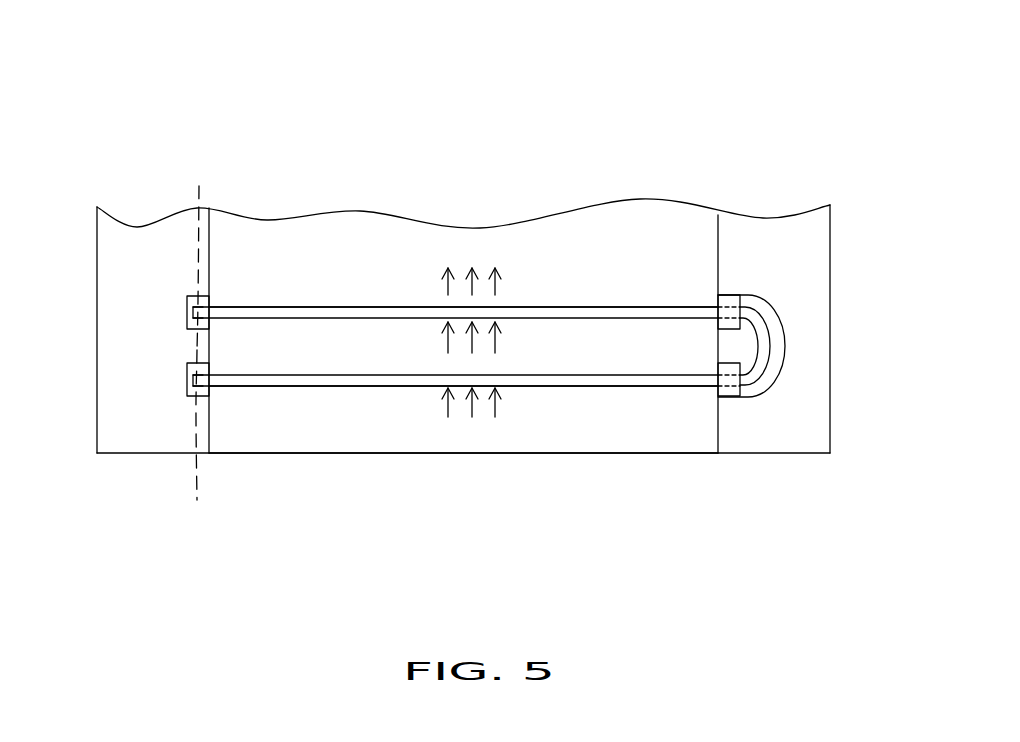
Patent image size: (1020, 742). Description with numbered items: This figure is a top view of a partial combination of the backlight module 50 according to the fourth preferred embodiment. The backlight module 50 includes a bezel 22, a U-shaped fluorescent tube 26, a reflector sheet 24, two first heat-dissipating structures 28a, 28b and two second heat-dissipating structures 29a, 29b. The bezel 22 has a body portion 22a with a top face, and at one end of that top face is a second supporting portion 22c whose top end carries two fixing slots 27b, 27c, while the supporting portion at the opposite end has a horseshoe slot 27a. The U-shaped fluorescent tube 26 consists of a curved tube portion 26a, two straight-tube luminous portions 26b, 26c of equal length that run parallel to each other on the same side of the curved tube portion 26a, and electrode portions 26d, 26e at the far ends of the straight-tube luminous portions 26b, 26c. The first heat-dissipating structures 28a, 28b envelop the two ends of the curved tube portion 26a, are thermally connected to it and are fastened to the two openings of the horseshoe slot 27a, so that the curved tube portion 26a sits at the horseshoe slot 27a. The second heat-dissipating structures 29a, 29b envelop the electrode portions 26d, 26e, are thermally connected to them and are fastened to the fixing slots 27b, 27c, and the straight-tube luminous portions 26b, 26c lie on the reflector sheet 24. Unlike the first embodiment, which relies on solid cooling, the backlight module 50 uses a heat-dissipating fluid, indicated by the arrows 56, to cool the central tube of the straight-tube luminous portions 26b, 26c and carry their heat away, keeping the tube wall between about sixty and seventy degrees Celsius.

The backlight module 50 is at (853, 73).
The bezel 22 is at (835, 238).
The body portion 22a is at (277, 453).
The second supporting portion 22c is at (142, 440).
The reflector sheet 24 is at (348, 440).
The U-shaped fluorescent tube 26 is at (596, 302).
The curved tube portion 26a is at (768, 322).
The straight-tube luminous portion 26b is at (420, 313).
The straight-tube luminous portion 26c is at (597, 388).
The electrode portion 26d is at (202, 252).
The electrode portion 26e is at (210, 442).
The horseshoe slot 27a is at (773, 366).
The fixing slot 27b is at (181, 293).
The fixing slot 27c is at (182, 396).
The first heat-dissipating structure 28a is at (730, 295).
The first heat-dissipating structure 28b is at (730, 397).
The second heat-dissipating structure 29a is at (186, 312).
The second heat-dissipating structure 29b is at (186, 381).
The airflow direction 56 is at (471, 360).